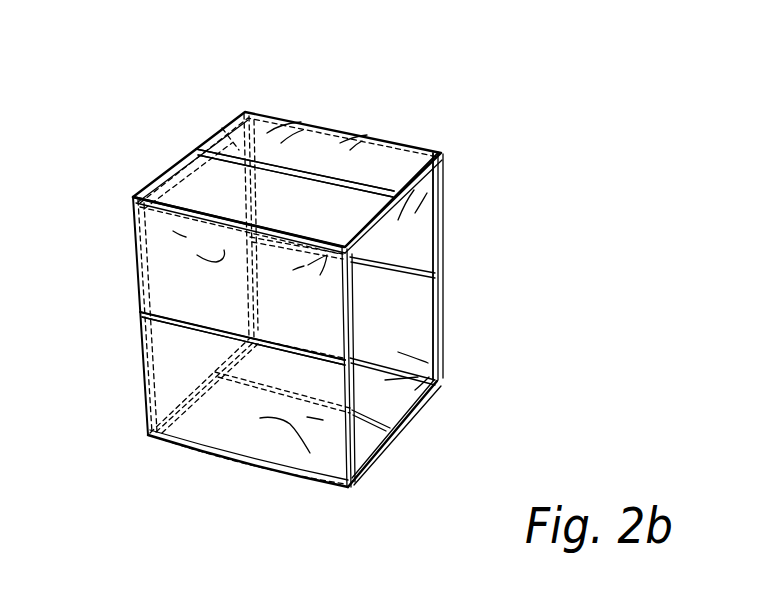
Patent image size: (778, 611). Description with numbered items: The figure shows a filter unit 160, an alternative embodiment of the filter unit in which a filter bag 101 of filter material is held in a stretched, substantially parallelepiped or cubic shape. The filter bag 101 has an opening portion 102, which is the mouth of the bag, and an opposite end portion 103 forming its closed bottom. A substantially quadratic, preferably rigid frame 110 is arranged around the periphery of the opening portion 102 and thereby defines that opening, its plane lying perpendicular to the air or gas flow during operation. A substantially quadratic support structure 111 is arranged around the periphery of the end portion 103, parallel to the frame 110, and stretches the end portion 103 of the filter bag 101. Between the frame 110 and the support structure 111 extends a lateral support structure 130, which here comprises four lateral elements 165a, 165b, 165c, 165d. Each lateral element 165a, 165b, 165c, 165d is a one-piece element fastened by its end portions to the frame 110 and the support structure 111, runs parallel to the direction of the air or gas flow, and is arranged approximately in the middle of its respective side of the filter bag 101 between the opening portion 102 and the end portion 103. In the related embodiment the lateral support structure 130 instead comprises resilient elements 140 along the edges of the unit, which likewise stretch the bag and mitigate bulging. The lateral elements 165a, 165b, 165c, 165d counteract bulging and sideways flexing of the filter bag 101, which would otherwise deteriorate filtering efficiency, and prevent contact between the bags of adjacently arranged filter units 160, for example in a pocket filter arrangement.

The filter unit 160 is at (417, 88).
The filter bag 101 is at (238, 435).
The opening portion 102 is at (415, 326).
The end portion 103 is at (220, 128).
The frame 110 is at (397, 433).
The support structure 111 is at (155, 188).
The lateral support structure 130 is at (265, 156).
The resilient elements 140 is at (363, 358).
The lateral element 165a is at (185, 322).
The lateral element 165b is at (306, 165).
The lateral element 165c is at (398, 270).
The lateral element 165d is at (365, 414).